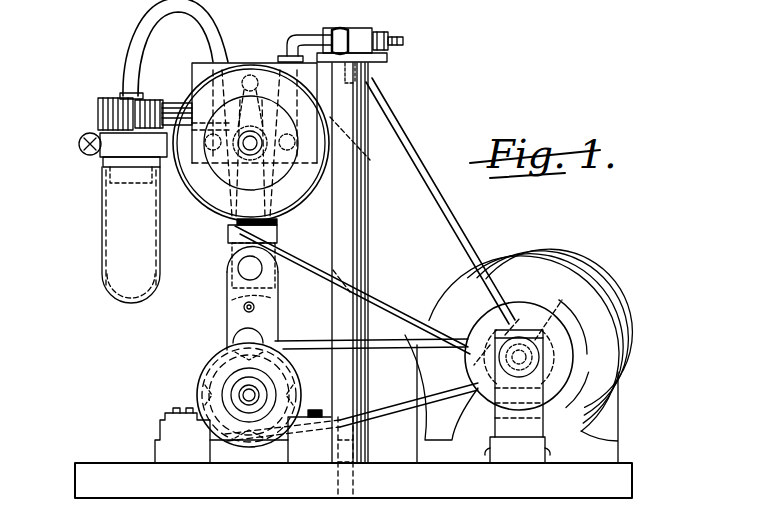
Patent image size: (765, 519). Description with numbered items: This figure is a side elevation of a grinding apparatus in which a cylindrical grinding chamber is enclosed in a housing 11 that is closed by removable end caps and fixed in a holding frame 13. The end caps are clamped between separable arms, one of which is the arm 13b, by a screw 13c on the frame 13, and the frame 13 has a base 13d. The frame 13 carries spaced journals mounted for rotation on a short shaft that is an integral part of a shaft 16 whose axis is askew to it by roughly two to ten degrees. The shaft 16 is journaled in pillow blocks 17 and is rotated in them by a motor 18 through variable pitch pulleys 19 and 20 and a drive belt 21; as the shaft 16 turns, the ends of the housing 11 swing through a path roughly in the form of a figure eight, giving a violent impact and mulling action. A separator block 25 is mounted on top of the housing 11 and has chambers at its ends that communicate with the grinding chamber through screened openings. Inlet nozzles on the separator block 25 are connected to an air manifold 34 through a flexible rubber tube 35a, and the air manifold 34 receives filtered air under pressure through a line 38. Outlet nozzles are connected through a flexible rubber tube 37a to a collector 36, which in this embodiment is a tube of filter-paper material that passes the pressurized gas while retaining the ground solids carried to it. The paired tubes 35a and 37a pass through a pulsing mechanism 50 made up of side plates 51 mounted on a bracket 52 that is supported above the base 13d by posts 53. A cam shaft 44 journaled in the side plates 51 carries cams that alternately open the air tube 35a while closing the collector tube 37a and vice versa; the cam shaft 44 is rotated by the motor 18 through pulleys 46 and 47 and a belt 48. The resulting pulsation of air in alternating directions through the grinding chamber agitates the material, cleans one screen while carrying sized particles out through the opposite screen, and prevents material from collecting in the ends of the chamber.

The housing 11 is at (227, 276).
The holding frame 13 is at (285, 356).
The separable arm 13b is at (228, 321).
The screw 13c is at (262, 301).
The base 13d is at (108, 463).
The shaft 16 is at (249, 397).
The pillow blocks 17 is at (172, 410).
The motor 18 is at (600, 350).
The variable pitch pulley 19 is at (521, 302).
The variable pitch pulley 20 is at (206, 368).
The drive belt 21 is at (395, 366).
The separator block 25 is at (228, 238).
The air manifold 34 is at (356, 38).
The flexible rubber tube 35a is at (287, 60).
The collector 36 is at (104, 223).
The flexible rubber tube 37a is at (215, 16).
The line 38 is at (393, 40).
The shaft 44 is at (232, 230).
The pulley 46 is at (293, 210).
The pulley 47 is at (548, 325).
The belt 48 is at (415, 208).
The pulsing mechanism 50 is at (188, 62).
The side plates 51 is at (250, 143).
The bracket 52 is at (370, 62).
The posts 53 is at (350, 241).